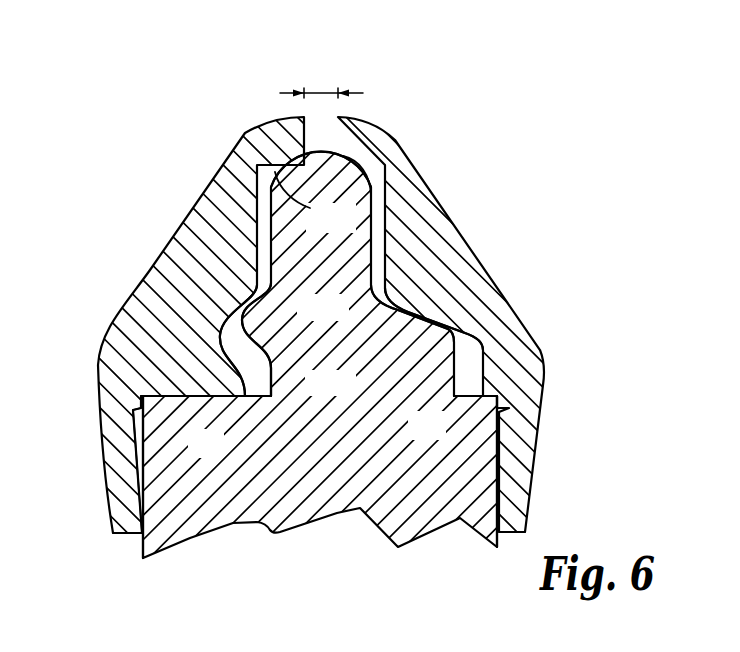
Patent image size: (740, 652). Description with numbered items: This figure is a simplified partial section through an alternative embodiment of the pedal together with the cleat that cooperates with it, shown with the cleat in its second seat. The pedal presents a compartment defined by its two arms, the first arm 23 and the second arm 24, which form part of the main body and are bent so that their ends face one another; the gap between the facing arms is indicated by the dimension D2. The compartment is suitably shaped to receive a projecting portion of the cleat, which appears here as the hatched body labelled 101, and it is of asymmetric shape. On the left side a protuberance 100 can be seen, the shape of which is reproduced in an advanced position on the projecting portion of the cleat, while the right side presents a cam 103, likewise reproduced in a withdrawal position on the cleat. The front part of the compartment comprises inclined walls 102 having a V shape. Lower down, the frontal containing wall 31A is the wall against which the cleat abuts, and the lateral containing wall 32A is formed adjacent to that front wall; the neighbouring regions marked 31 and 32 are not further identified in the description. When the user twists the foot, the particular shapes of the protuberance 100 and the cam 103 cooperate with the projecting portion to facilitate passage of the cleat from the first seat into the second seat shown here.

The first arm 23 is at (223, 177).
The second arm 24 is at (420, 187).
The insert shank 101 is at (250, 322).
The inclined walls 102 is at (347, 186).
The cam 103 is at (425, 320).
The protuberance 100 is at (247, 382).
The lower component / base 32 is at (146, 404).
The jaw inner face 31 is at (138, 412).
The frontal containing wall 31A is at (139, 408).
The lateral containing wall 32A is at (138, 400).
The slot width dimension D2 is at (355, 93).